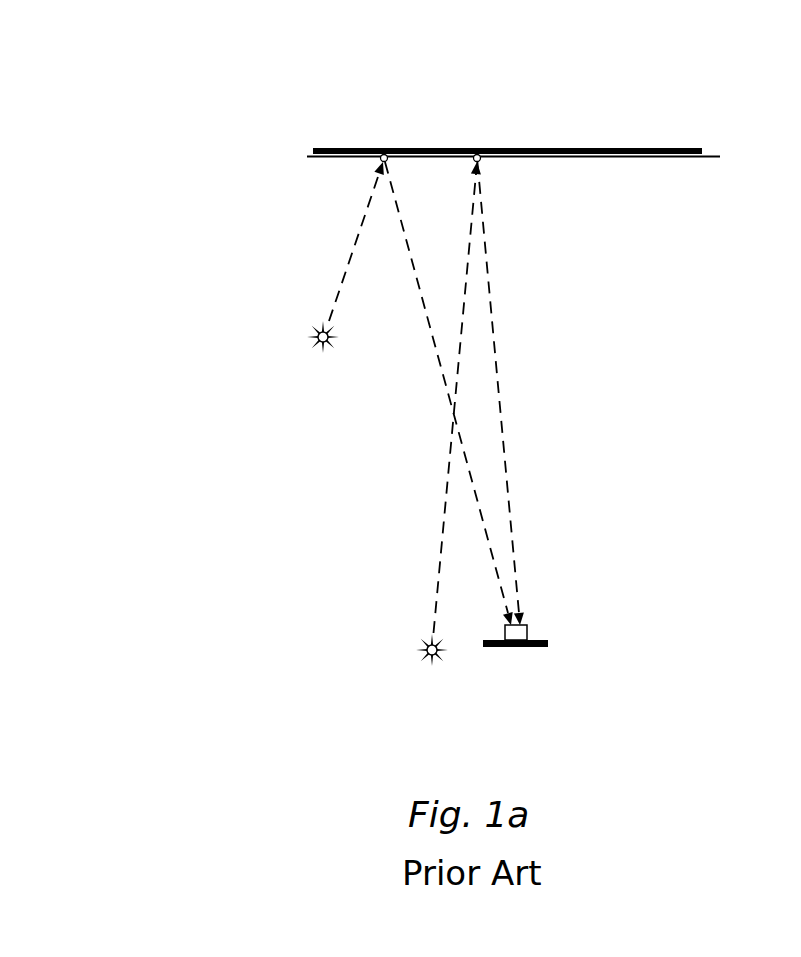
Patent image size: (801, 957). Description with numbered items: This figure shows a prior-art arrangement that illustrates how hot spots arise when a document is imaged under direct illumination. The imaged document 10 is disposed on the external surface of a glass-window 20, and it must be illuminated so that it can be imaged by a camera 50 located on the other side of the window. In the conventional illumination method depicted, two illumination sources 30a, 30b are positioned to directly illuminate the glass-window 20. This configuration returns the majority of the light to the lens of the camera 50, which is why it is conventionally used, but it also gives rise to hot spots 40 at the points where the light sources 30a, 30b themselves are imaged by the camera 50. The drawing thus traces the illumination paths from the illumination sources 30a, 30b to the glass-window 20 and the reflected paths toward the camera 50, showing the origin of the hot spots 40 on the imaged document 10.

The imaged document 10 is at (590, 148).
The glass-window 20 is at (647, 158).
The illumination source 30a is at (307, 333).
The illumination source 30b is at (415, 648).
The hot spot 40 is at (473, 148).
The camera 50 is at (518, 647).